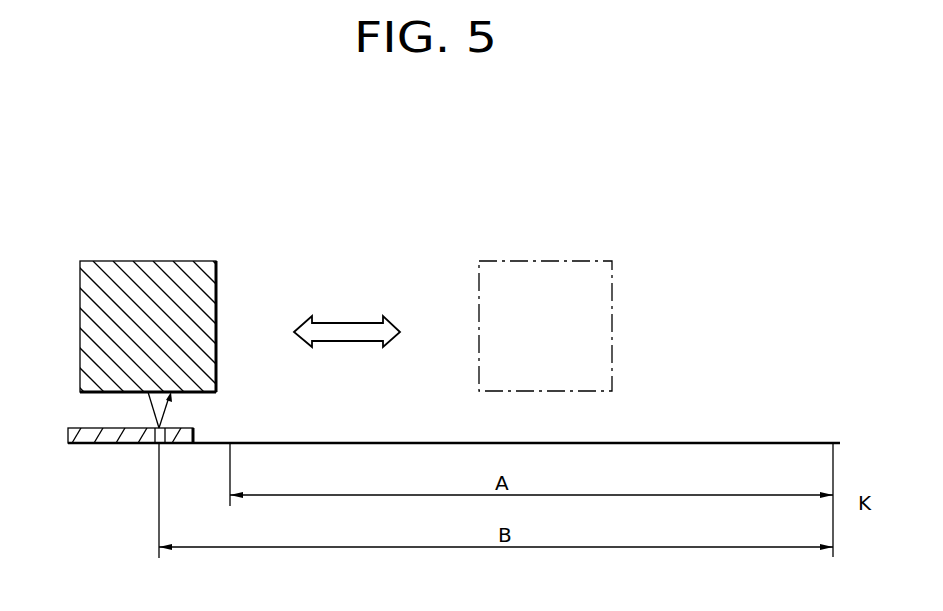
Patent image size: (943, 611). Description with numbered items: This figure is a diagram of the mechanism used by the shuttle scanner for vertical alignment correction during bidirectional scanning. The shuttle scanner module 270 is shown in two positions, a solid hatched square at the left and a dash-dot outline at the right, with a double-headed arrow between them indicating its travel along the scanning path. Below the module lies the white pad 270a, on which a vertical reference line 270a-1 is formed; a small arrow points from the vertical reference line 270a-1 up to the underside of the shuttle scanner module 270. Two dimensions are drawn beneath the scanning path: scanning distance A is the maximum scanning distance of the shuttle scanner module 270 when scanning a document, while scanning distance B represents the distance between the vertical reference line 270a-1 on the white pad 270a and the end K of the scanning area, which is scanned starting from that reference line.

The shuttle scanner module 270 is at (320, 294).
The white pad 270a is at (119, 458).
The vertical reference line 270a-1 is at (108, 463).